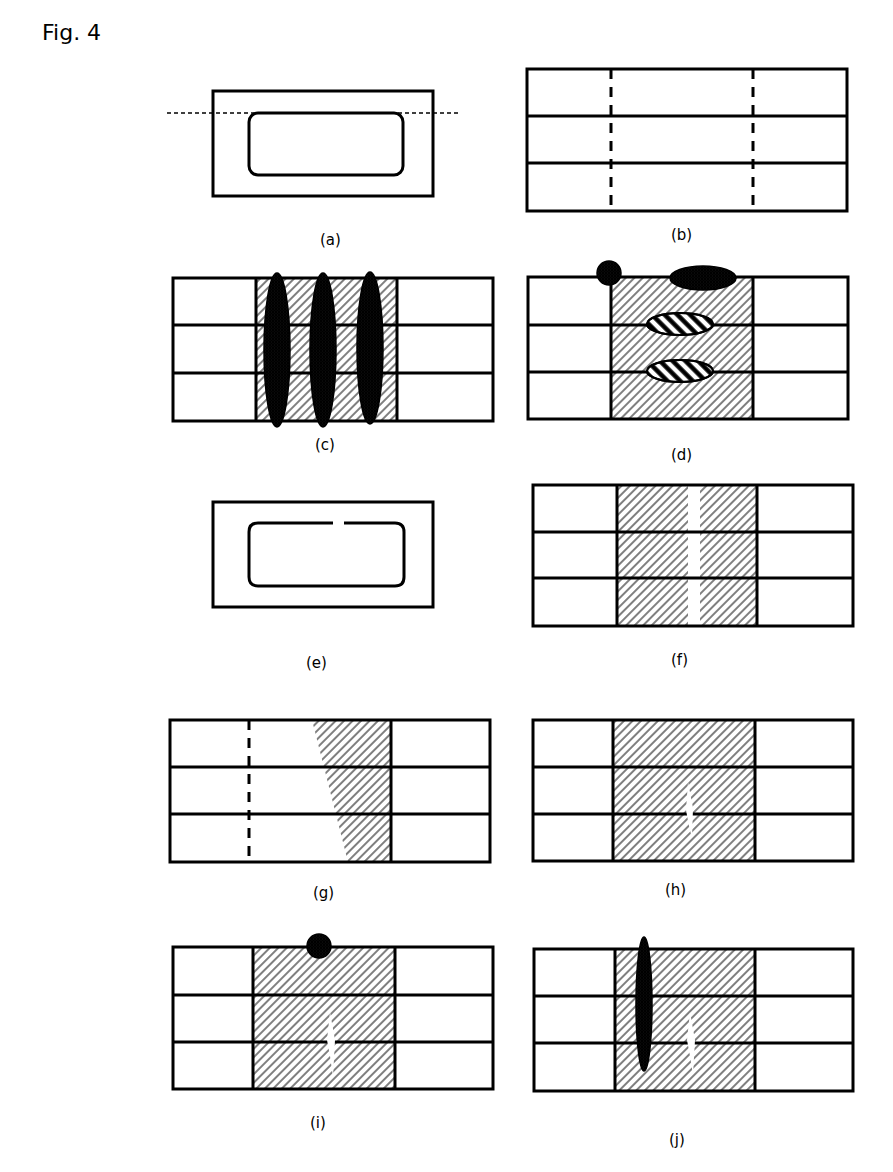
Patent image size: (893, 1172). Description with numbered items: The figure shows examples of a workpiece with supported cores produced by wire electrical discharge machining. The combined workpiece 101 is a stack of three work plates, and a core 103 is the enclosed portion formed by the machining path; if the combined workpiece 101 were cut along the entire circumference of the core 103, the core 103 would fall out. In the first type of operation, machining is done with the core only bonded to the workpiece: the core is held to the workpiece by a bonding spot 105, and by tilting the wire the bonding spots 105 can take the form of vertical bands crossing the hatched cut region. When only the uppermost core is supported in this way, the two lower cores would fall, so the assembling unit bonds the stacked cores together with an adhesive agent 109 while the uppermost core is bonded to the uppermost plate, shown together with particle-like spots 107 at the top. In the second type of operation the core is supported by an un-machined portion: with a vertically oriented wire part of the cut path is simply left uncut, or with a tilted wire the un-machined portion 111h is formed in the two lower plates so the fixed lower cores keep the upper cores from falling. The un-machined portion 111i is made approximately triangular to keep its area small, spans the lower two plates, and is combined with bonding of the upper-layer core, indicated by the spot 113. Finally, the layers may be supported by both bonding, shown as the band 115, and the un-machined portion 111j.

The combined workpiece 101 is at (380, 92).
The core 103 is at (404, 147).
The bonding spot 105 is at (367, 272).
The particle defects 107 is at (690, 270).
The adhesive agent 109 is at (707, 330).
The un-machined portion 111h is at (697, 827).
The un-machined portion 111i is at (338, 1055).
The un-machined portion 111j is at (698, 1056).
The particle defect 113 is at (312, 936).
The void 115 is at (652, 942).